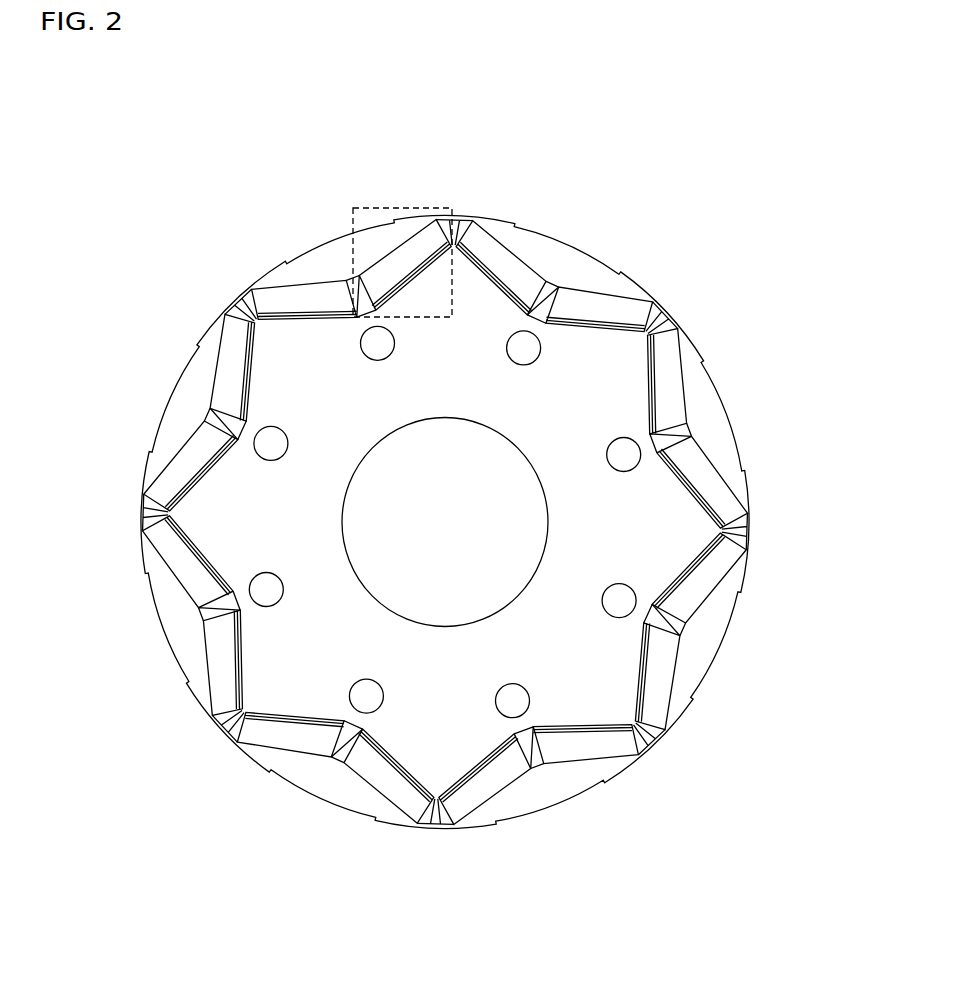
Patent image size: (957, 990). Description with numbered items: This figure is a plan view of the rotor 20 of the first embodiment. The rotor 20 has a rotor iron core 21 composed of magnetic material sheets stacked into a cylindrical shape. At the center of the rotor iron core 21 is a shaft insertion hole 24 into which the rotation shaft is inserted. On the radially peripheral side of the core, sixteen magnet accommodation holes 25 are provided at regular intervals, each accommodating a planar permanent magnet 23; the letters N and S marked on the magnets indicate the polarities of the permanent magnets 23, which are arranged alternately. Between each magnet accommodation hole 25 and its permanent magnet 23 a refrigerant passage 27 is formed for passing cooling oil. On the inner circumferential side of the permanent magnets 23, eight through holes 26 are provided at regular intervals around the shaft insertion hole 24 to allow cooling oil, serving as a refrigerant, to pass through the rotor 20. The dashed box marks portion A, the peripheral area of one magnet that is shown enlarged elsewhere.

The rotor 20 is at (580, 250).
The rotor iron core 21 is at (712, 390).
The permanent magnet 23 is at (728, 506).
The shaft insertion hole 24 is at (397, 526).
The magnet accommodation hole 25 is at (743, 526).
The through hole 26 is at (620, 607).
The refrigerant passage 27 is at (676, 564).
The portion A is at (390, 208).